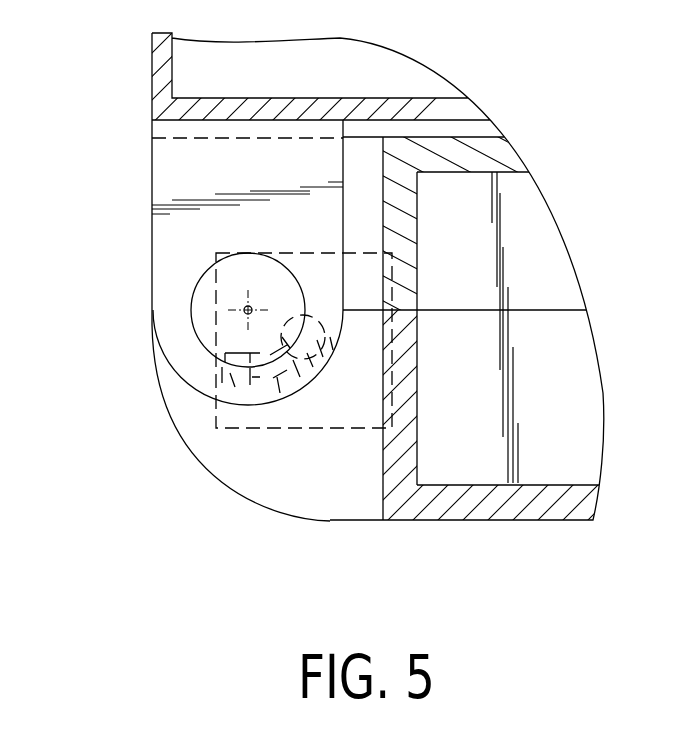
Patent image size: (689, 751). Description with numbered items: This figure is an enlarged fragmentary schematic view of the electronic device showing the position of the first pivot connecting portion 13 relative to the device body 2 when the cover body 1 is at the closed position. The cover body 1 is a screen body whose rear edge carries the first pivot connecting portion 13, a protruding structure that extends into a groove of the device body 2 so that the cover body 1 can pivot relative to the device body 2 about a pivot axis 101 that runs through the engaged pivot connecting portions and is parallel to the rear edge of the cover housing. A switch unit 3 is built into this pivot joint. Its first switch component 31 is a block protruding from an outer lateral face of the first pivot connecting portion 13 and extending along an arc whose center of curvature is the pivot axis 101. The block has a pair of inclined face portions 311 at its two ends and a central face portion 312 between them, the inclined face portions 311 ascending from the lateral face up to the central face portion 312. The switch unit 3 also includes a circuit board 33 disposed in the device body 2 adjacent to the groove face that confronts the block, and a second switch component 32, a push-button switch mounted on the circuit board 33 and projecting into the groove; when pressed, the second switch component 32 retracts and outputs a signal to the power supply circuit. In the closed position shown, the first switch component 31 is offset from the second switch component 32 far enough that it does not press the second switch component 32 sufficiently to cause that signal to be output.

The cover body 1 is at (160, 66).
The first pivot connecting portion 13 is at (165, 247).
The device body 2 is at (467, 522).
The switch unit 3 is at (260, 293).
The circuit board 33 is at (238, 312).
The pivot axis 101 is at (246, 312).
The first switch component 31 is at (283, 395).
The inclined face portion 311 is at (235, 378).
The central face portion 312 is at (250, 400).
The second switch component 32 is at (327, 362).